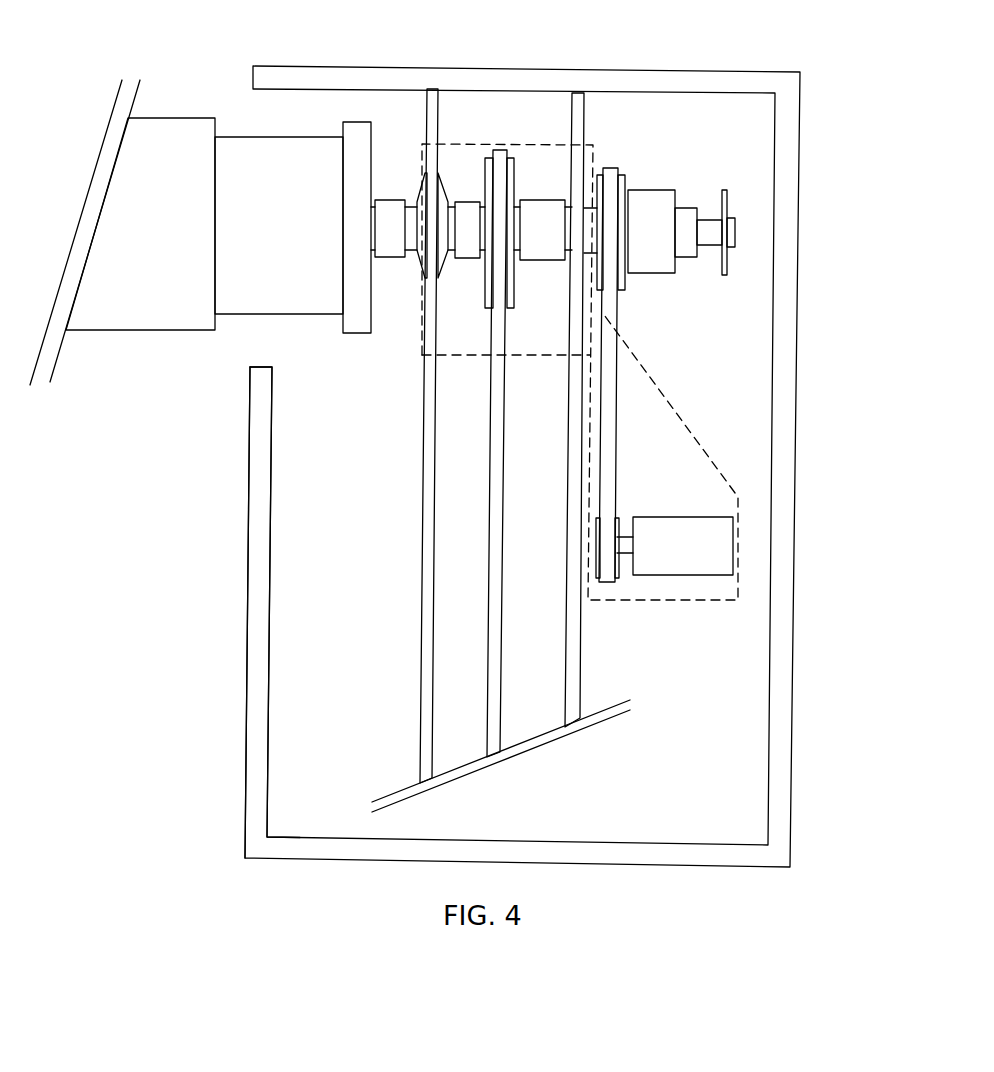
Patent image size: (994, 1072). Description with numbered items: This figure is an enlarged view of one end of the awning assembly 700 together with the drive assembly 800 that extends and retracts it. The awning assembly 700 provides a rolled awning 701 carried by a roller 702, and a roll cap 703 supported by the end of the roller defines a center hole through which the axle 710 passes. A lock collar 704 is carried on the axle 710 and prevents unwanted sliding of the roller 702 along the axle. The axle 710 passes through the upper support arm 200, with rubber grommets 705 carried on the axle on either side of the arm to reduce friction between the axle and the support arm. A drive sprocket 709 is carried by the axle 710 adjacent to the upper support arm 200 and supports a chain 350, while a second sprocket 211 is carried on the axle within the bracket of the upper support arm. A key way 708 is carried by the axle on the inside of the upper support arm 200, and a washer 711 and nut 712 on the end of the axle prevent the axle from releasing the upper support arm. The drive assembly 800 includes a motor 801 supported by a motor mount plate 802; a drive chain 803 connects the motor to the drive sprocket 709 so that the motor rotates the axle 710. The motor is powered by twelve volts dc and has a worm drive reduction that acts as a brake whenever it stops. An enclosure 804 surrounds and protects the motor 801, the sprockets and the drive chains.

The upper support arm 200 is at (413, 603).
The sprocket 211 is at (517, 312).
The chain 350 is at (478, 630).
The awning assembly 700 is at (193, 85).
The rolled awning 701 is at (150, 340).
The roller 702 is at (247, 333).
The roll cap 703 is at (353, 343).
The lock collar 704 is at (392, 192).
The rubber grommets 705 is at (420, 277).
The key way 708 is at (653, 182).
The drive sprocket 709 is at (630, 297).
The axle 710 is at (707, 217).
The washer 711 is at (730, 280).
The nut 712 is at (743, 228).
The drive assembly 800 is at (753, 470).
The motor 801 is at (723, 580).
The motor mount plate 802 is at (698, 607).
The drive chain 803 is at (617, 407).
The enclosure 804 is at (245, 748).